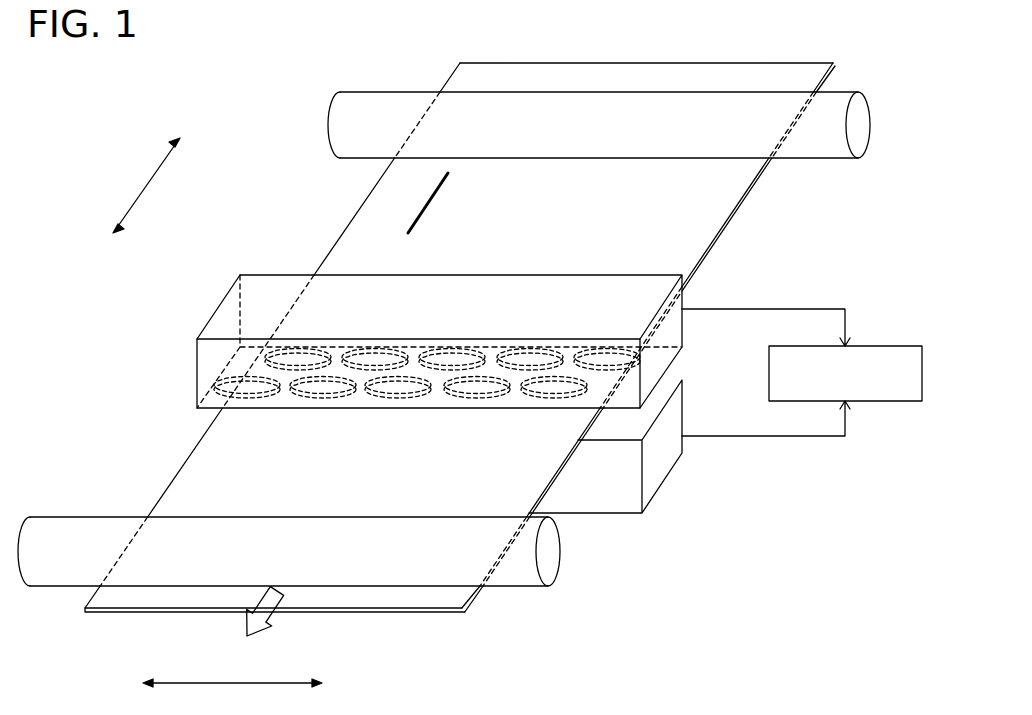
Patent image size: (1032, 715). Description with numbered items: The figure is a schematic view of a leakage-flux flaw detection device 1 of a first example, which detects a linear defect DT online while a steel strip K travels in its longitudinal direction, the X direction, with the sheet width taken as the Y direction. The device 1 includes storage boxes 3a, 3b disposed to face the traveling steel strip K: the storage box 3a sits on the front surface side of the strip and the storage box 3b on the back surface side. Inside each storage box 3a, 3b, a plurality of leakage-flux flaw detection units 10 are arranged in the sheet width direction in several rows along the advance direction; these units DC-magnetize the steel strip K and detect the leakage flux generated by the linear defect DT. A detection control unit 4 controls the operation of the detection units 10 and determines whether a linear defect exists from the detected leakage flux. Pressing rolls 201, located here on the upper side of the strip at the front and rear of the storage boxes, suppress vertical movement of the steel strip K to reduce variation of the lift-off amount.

The leakage-flux flaw detection device 1 is at (240, 128).
The steel strip K is at (712, 197).
The pressing rolls 201 is at (867, 130).
The linear defect DT is at (427, 208).
The storage box 3a is at (660, 350).
The leakage-flux flaw detection units 10 is at (610, 360).
The storage box 3b is at (648, 457).
The detection control unit 4 is at (889, 346).